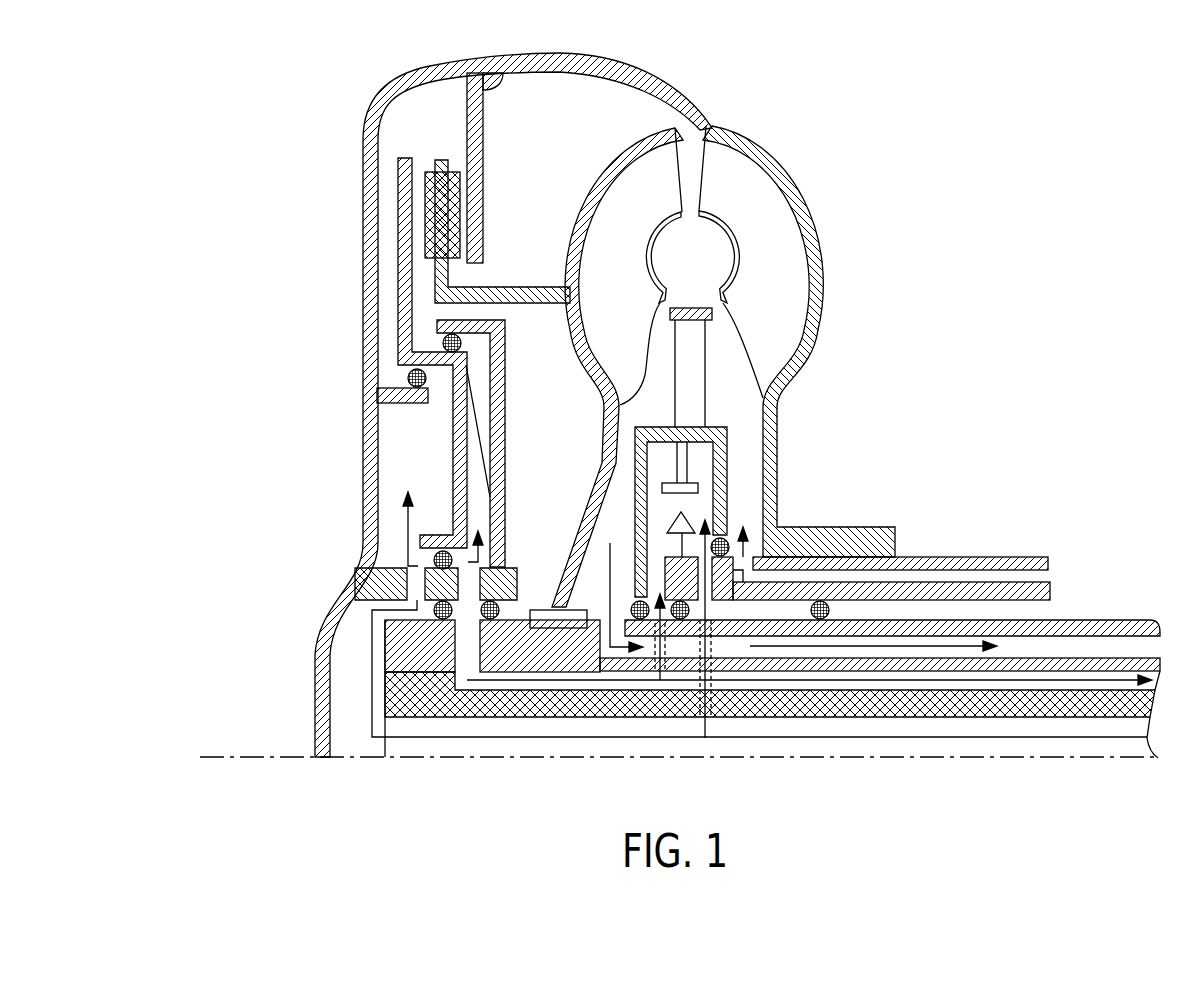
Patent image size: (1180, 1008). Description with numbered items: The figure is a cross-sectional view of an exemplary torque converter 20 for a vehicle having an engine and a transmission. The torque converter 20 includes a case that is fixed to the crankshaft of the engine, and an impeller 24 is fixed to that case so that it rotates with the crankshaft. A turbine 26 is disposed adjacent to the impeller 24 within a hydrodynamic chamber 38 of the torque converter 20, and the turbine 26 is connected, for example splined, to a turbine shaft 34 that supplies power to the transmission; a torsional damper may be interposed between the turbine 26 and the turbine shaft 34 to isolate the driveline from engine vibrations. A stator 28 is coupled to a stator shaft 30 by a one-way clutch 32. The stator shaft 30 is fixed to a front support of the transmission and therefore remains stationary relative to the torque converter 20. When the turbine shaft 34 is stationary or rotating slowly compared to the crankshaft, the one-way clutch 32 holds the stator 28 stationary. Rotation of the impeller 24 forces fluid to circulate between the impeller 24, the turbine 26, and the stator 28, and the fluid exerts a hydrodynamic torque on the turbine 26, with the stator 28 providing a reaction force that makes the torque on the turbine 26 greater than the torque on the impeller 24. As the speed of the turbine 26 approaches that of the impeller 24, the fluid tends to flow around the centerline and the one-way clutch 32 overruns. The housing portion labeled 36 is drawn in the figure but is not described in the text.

The torque converter 20 is at (845, 152).
The impeller 24 is at (771, 250).
The turbine 26 is at (631, 250).
The stator 28 is at (695, 337).
The stator shaft 30 is at (938, 562).
The one-way clutch 32 is at (690, 517).
The turbine shaft 34 is at (1112, 625).
The housing 36 is at (305, 190).
The hydrodynamic chamber 38 is at (693, 238).